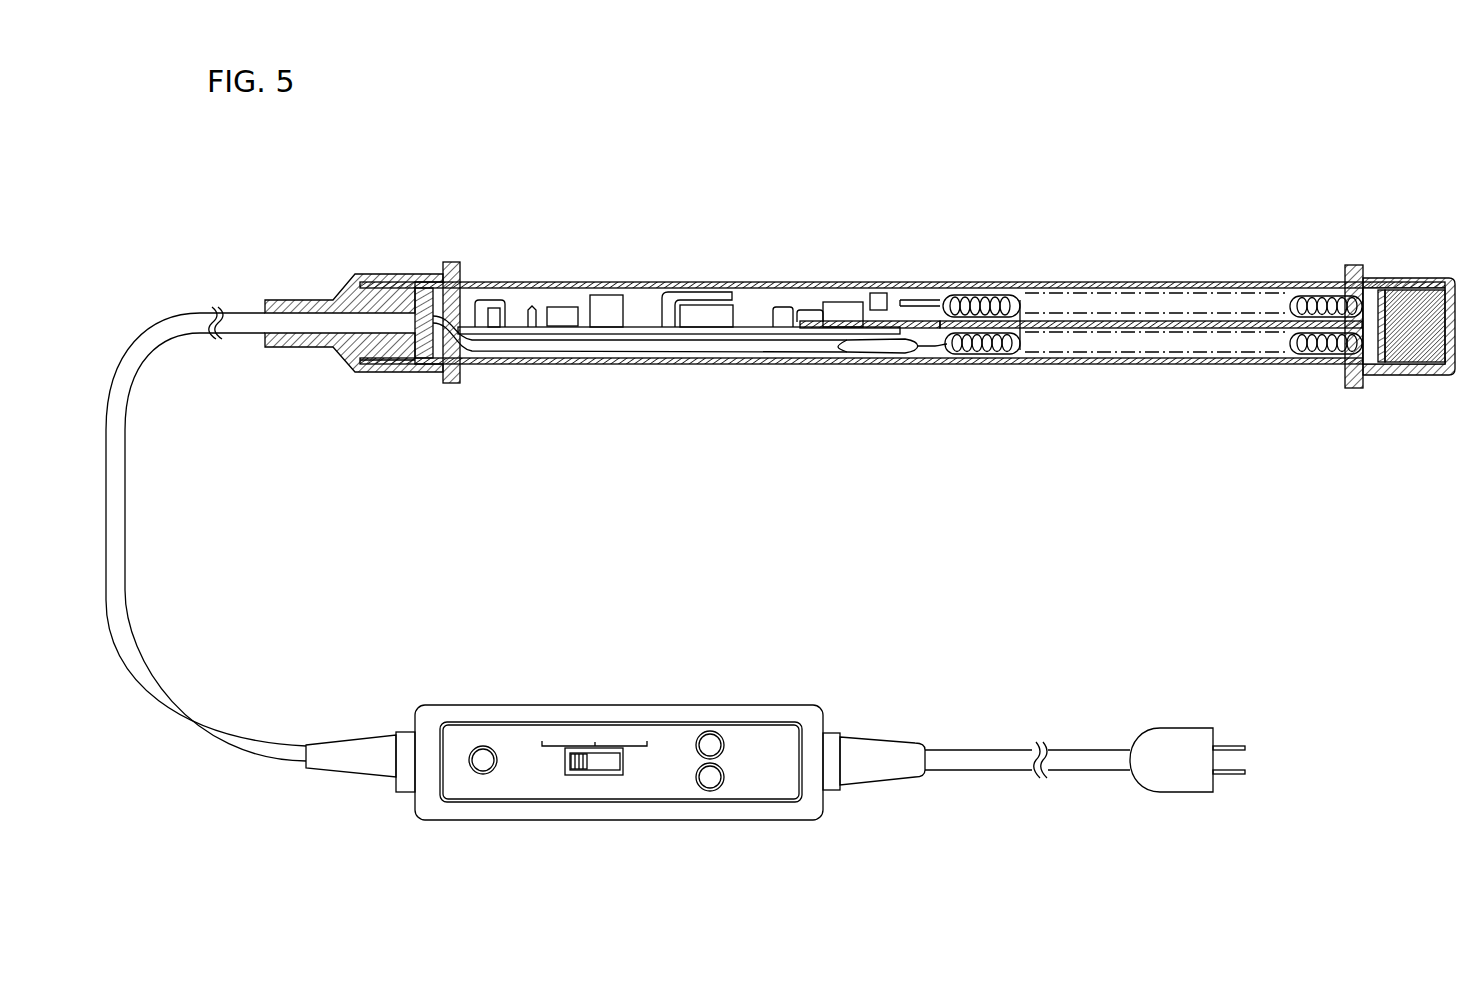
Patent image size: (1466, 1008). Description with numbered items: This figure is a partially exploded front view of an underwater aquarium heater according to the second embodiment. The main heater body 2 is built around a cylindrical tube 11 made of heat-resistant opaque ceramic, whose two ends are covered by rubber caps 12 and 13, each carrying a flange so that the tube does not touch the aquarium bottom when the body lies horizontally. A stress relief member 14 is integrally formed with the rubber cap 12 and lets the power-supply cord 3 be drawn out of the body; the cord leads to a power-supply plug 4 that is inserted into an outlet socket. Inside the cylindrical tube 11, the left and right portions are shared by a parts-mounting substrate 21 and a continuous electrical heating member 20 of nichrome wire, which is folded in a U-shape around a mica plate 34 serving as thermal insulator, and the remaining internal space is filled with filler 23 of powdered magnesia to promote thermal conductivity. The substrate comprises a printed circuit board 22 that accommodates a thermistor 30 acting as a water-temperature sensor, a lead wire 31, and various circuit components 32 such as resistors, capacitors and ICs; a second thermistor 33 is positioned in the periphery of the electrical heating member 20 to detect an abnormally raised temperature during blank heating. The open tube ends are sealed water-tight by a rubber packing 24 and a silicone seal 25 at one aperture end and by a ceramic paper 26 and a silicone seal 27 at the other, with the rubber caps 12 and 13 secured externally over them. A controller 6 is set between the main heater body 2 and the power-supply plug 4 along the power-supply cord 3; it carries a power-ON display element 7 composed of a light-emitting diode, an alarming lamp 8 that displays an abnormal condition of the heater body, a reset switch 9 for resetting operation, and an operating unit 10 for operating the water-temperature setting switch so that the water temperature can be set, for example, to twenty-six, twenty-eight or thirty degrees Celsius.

The main heater body 2 is at (1112, 277).
The power-supply cord 3 is at (1085, 772).
The power-supply plug 4 is at (1170, 778).
The controller 6 is at (477, 703).
The power-ON display element 7 is at (710, 742).
The alarming lamp 8 is at (710, 783).
The reset switch 9 is at (483, 767).
The operating unit 10 is at (600, 767).
The cylindrical tube 11 is at (965, 283).
The rubber cap 12 is at (345, 288).
The rubber cap 13 is at (1412, 329).
The stress relief member 14 is at (290, 346).
The electrical heating member 20 is at (1002, 360).
The parts-mounting substrate 21 is at (658, 196).
The printed circuit board 22 is at (548, 285).
The filler 23 is at (651, 285).
The rubber packing 24 is at (423, 365).
The silicone seal 25 is at (369, 369).
The ceramic paper 26 is at (1365, 377).
The silicone seal 27 is at (1415, 350).
The thermistor 30 is at (493, 285).
The lead wire 31 is at (792, 283).
The circuit components 32 is at (572, 285).
The thermistor 33 is at (875, 293).
The mica plate 34 is at (1017, 318).